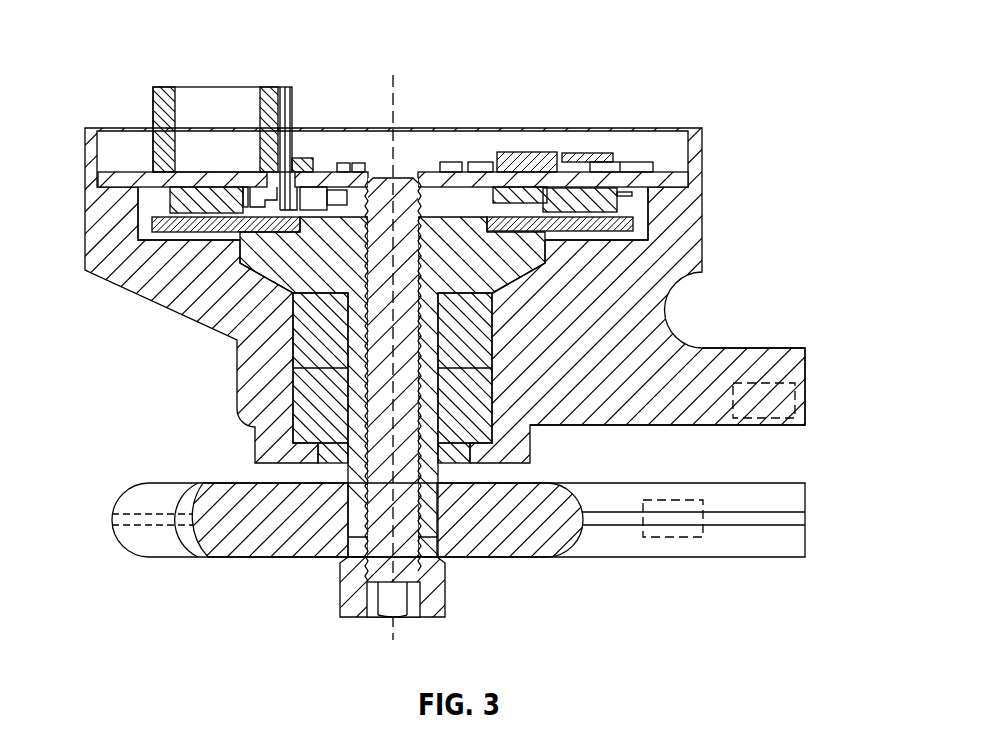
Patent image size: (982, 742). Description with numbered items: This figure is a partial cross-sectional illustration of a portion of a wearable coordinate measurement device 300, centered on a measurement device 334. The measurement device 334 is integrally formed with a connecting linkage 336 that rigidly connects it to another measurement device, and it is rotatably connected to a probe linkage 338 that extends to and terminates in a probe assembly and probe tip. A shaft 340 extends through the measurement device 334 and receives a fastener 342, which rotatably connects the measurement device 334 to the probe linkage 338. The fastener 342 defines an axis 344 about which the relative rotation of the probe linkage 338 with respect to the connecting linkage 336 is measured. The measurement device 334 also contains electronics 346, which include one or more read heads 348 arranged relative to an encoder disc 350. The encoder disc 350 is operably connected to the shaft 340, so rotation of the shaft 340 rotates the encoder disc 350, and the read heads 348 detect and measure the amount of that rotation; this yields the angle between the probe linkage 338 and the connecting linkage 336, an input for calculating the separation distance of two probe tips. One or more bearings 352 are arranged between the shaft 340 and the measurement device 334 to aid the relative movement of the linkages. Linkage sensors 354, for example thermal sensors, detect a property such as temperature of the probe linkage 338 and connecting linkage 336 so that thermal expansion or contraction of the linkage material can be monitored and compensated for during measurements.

The wearable coordinate measurement device 300 is at (162, 48).
The measurement device 334 is at (704, 181).
The connecting linkage 336 is at (782, 358).
The probe linkage 338 is at (753, 543).
The shaft 340 is at (353, 482).
The fastener 342 is at (353, 603).
The axis 344 is at (397, 110).
The electronics 346 is at (570, 148).
The read heads 348 is at (148, 208).
The encoder disc 350 is at (204, 226).
The bearings 352 is at (480, 347).
The linkage sensors 354 is at (795, 390).